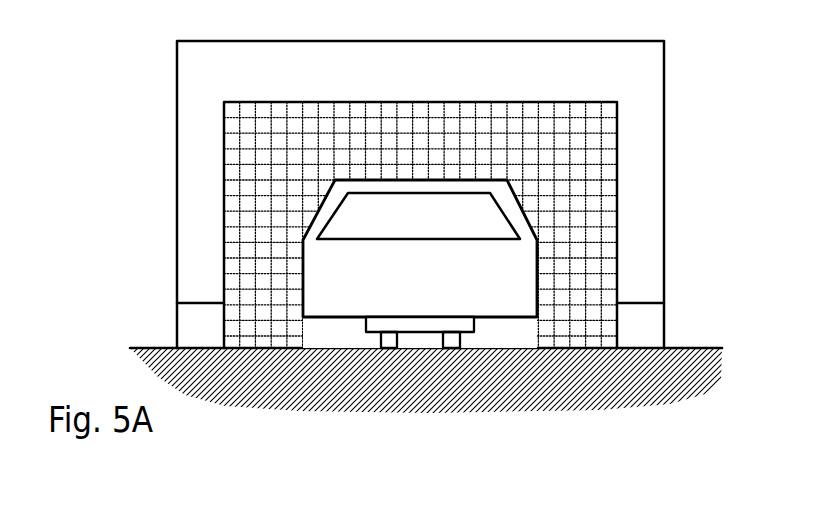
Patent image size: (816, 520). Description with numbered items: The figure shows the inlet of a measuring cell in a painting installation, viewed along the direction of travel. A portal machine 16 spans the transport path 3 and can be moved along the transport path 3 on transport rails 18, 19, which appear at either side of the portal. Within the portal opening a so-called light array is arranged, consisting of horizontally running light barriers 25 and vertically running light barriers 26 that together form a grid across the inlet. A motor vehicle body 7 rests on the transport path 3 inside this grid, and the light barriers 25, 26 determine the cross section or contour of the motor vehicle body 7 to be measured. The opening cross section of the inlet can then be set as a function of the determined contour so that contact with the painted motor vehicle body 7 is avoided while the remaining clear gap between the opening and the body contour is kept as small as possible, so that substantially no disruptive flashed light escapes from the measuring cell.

The portal machine 16 is at (428, 41).
The horizontally running light barriers 25 is at (513, 118).
The vertically running light barriers 26 is at (582, 202).
The transport rail 18 is at (177, 320).
The transport rail 19 is at (664, 325).
The transport path 3 is at (480, 320).
The motor vehicle body 7 is at (366, 320).